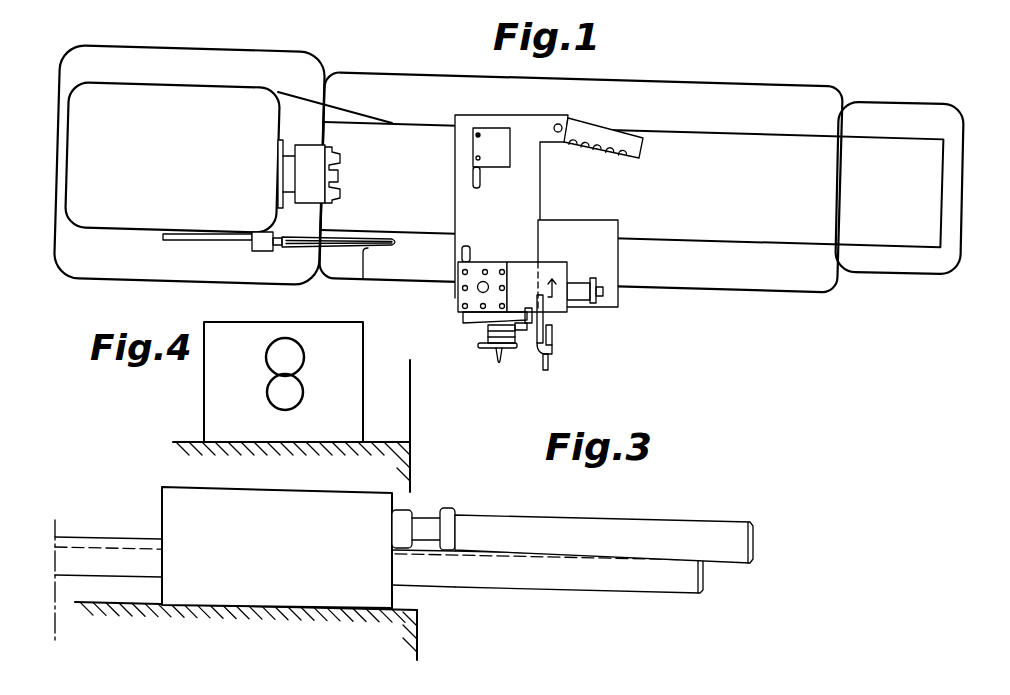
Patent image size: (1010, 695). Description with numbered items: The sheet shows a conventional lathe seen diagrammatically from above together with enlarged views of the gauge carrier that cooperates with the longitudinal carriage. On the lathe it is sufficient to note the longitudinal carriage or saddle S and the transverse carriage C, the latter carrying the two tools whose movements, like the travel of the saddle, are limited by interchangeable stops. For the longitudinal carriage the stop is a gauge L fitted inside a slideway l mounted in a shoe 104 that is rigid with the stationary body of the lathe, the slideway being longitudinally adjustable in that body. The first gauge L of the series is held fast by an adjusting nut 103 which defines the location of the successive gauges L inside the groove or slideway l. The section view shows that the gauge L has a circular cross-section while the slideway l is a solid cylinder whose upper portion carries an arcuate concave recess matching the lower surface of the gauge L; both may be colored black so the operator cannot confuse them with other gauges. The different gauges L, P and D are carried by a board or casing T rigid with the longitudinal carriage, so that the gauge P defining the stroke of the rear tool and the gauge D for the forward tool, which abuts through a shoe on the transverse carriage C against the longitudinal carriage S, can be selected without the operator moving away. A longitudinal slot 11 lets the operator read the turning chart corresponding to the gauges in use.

In FIG. 1, the shoe 104 is at (257, 248).
In FIG. 4, the shoe 104 is at (358, 427).
In FIG. 3, the shoe 104 is at (170, 508).
In FIG. 3, the adjusting nut 103 is at (447, 510).
In FIG. 1, the longitudinal slot 11 is at (556, 275).
In FIG. 1, the gauge L is at (363, 277).
In FIG. 4, the gauge L is at (286, 343).
In FIG. 3, the gauge L is at (618, 528).
In FIG. 4, the slideway l is at (278, 403).
In FIG. 3, the slideway l is at (600, 583).
In FIG. 1, the transverse carriage C is at (527, 195).
In FIG. 1, the longitudinal carriage S is at (605, 232).
In FIG. 1, the board or casing T is at (602, 135).
In FIG. 1, the gauge for rear tool P is at (527, 316).
In FIG. 1, the gauge for forward tool D is at (554, 335).